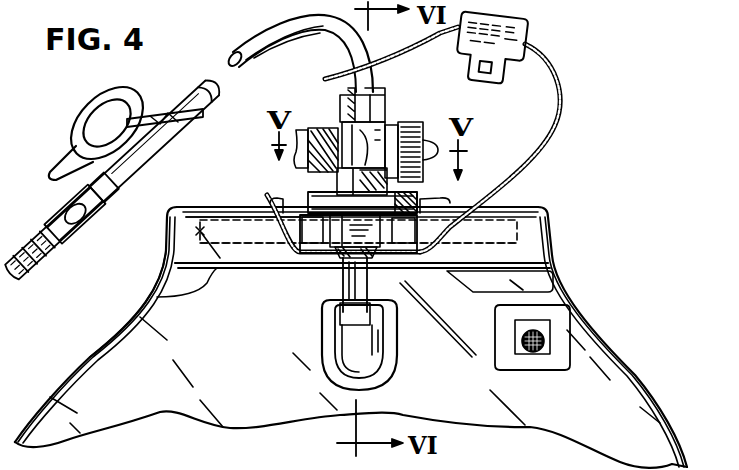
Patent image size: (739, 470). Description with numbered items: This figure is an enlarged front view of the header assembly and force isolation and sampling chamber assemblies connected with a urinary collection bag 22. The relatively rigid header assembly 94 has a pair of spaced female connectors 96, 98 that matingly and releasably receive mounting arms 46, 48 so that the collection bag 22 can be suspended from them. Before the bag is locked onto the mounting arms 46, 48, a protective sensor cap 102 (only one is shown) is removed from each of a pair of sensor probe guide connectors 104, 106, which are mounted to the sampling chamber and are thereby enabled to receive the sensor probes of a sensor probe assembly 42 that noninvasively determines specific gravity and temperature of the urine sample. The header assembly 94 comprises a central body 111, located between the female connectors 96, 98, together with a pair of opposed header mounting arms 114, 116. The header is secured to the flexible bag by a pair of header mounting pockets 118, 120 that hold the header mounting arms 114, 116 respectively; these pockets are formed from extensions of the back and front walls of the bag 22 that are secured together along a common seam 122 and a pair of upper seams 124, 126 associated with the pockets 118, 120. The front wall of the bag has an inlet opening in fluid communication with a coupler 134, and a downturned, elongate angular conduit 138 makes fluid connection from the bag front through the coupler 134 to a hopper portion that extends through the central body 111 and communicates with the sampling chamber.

The collection bag 22 is at (598, 390).
The sensor probe assembly 42 is at (296, 168).
The mounting arm 46 is at (202, 217).
The mounting arm 48 is at (515, 222).
The header assembly 94 is at (328, 264).
The female connector 96 is at (307, 203).
The female connector 98 is at (418, 198).
The protective sensor cap 102 is at (408, 128).
The sensor probe guide connector 104 is at (330, 127).
The sensor probe guide connector 106 is at (393, 120).
The central body 111 is at (346, 273).
The header mounting arm 114 is at (195, 232).
The header mounting arm 116 is at (520, 238).
The header mounting pocket 118 is at (187, 260).
The header mounting pocket 120 is at (513, 260).
The common seam 122 is at (150, 292).
The upper seam 124 is at (232, 207).
The upper seam 126 is at (507, 210).
The coupler 134 is at (385, 358).
The angular conduit 138 is at (279, 326).